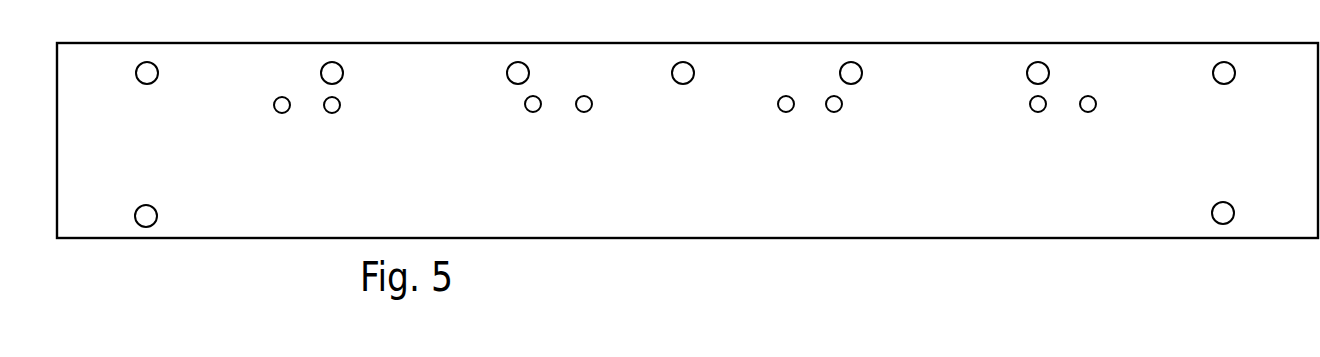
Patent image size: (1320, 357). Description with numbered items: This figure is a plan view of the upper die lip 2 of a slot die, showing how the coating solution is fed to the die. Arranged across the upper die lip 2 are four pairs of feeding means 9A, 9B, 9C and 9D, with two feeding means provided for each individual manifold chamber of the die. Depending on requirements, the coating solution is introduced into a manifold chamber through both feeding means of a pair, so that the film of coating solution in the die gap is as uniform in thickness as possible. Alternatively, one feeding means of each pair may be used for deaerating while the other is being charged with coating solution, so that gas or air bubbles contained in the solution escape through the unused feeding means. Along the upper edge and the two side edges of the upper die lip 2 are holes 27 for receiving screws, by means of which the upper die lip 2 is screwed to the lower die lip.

The upper die lip 2 is at (712, 210).
The holes 27 is at (332, 72).
The feeding means 9A is at (343, 116).
The feeding means 9B is at (598, 116).
The feeding means 9C is at (846, 116).
The feeding means 9D is at (1098, 116).